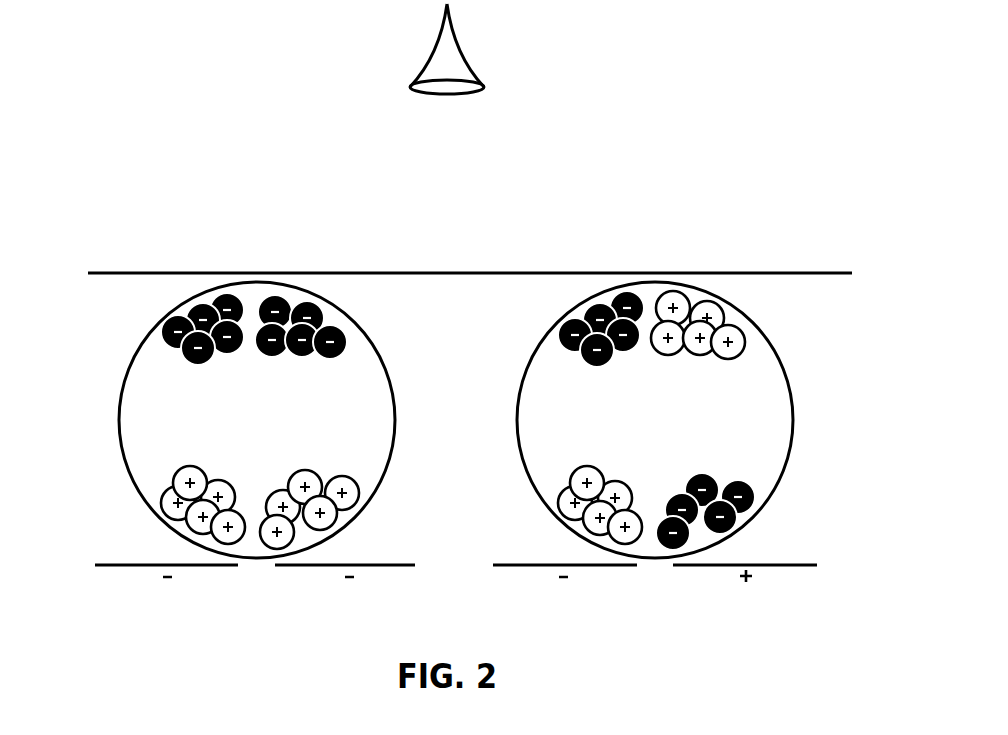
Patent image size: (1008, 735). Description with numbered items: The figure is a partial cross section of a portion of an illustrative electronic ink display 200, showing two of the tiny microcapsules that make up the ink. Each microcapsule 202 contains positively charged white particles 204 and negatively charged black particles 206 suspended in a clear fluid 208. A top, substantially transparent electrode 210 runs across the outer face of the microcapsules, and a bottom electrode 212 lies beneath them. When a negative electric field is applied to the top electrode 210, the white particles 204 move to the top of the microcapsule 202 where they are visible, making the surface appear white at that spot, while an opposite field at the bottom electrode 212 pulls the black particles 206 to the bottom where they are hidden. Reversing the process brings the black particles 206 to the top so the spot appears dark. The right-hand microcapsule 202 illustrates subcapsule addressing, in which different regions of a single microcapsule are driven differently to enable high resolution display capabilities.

The electronic ink display 200 is at (103, 78).
The microcapsule 202 is at (120, 440).
The positively charged white particles 204 is at (162, 497).
The negatively charged black particles 206 is at (165, 333).
The clear fluid 208 is at (337, 427).
The top substantially transparent electrode 210 is at (598, 273).
The bottom electrode 212 is at (218, 566).